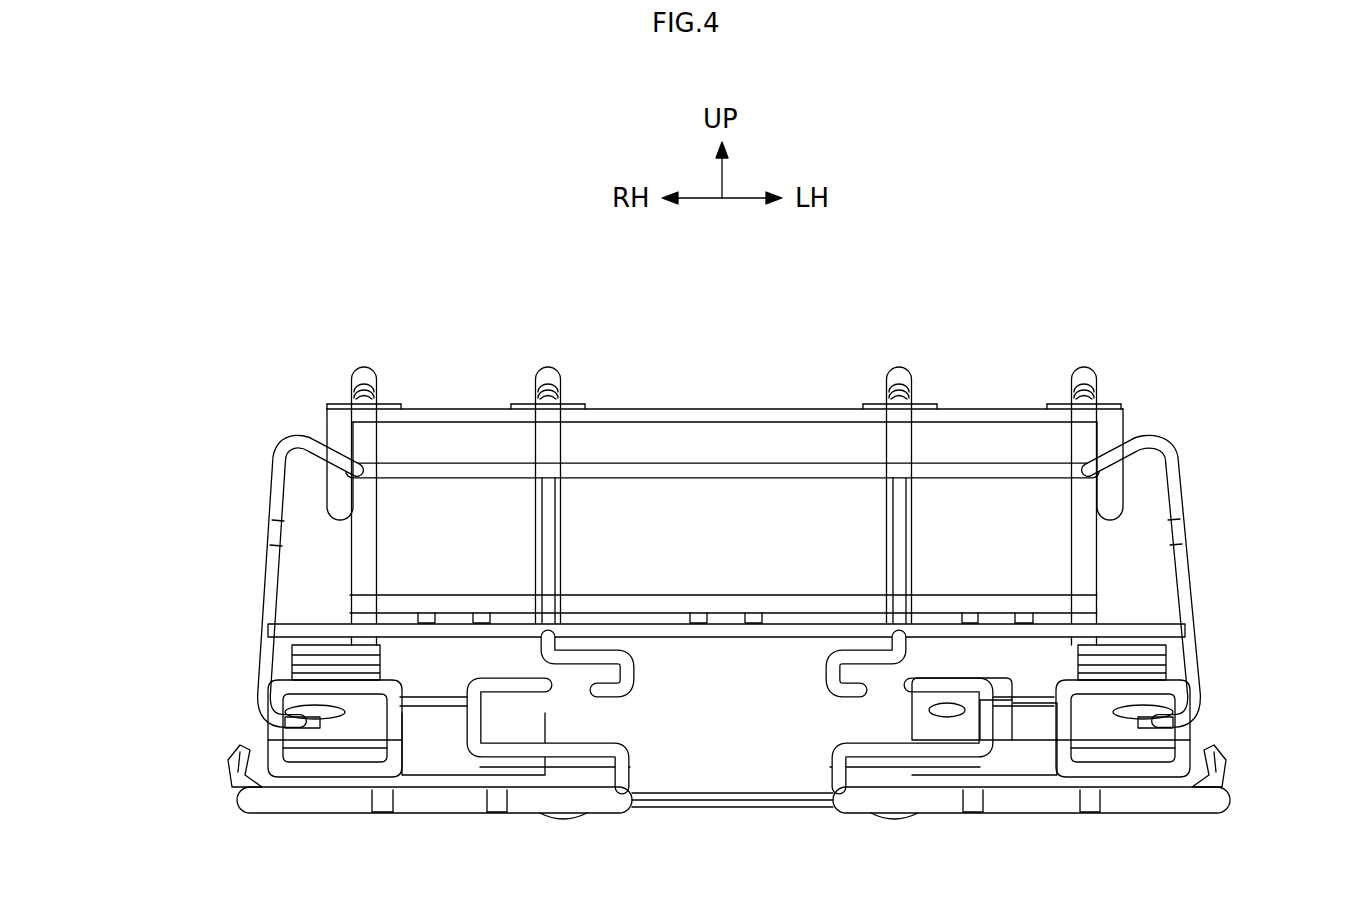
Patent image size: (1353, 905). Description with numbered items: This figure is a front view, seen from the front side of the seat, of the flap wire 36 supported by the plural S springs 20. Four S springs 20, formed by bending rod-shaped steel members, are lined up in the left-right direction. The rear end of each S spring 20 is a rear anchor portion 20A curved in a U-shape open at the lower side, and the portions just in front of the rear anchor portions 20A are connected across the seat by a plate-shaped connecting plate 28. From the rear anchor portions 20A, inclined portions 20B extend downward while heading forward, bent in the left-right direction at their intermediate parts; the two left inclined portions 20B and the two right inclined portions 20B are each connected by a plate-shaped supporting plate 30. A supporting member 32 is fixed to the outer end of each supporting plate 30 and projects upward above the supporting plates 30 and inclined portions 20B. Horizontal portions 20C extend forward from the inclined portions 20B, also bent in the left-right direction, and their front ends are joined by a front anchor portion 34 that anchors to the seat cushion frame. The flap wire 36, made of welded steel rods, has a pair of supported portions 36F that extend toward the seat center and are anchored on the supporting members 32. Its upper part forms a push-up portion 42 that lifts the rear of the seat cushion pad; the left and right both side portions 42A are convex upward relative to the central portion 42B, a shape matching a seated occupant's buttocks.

The S spring 20 is at (707, 448).
The rear anchor portion 20A is at (352, 367).
The inclined portion 20B is at (825, 668).
The horizontal portion 20C is at (832, 757).
The connecting plate 28 is at (754, 447).
The supporting plate 30 is at (270, 690).
The supporting member 32 is at (303, 735).
The front anchor portion 34 is at (538, 800).
The flap wire 36 is at (1181, 499).
The supported portion 36F is at (325, 735).
The push-up portion 42 is at (733, 496).
The both side portion 42A is at (293, 438).
The central portion 42B is at (673, 465).